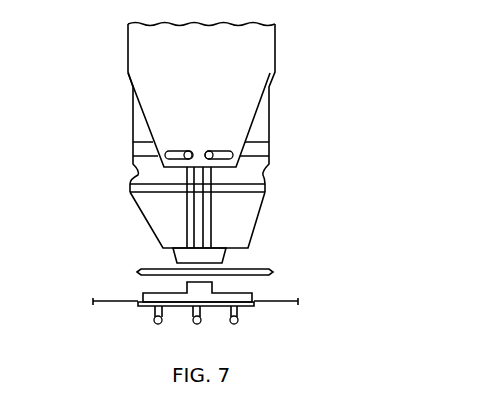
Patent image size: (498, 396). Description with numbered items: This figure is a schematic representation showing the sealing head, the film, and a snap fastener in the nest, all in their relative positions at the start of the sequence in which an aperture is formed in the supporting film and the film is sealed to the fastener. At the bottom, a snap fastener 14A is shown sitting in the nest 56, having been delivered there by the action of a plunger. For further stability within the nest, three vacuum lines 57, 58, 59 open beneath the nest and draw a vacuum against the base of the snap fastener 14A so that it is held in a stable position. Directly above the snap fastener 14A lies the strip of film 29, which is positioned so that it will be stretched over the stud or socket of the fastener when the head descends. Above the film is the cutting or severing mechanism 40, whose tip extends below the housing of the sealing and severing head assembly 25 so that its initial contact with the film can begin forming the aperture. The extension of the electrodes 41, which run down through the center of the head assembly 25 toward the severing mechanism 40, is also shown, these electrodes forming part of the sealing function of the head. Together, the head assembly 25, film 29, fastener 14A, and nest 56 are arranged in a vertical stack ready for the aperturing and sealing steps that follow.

The sealing and severing head assembly 25 is at (278, 135).
The electrodes 41 is at (186, 233).
The cutting or severing mechanism 40 is at (240, 252).
The strip of film 29 is at (262, 268).
The snap fastener 14A is at (253, 297).
The nest 56 is at (255, 307).
The vacuum line 57 is at (156, 324).
The vacuum line 58 is at (199, 324).
The vacuum line 59 is at (236, 324).